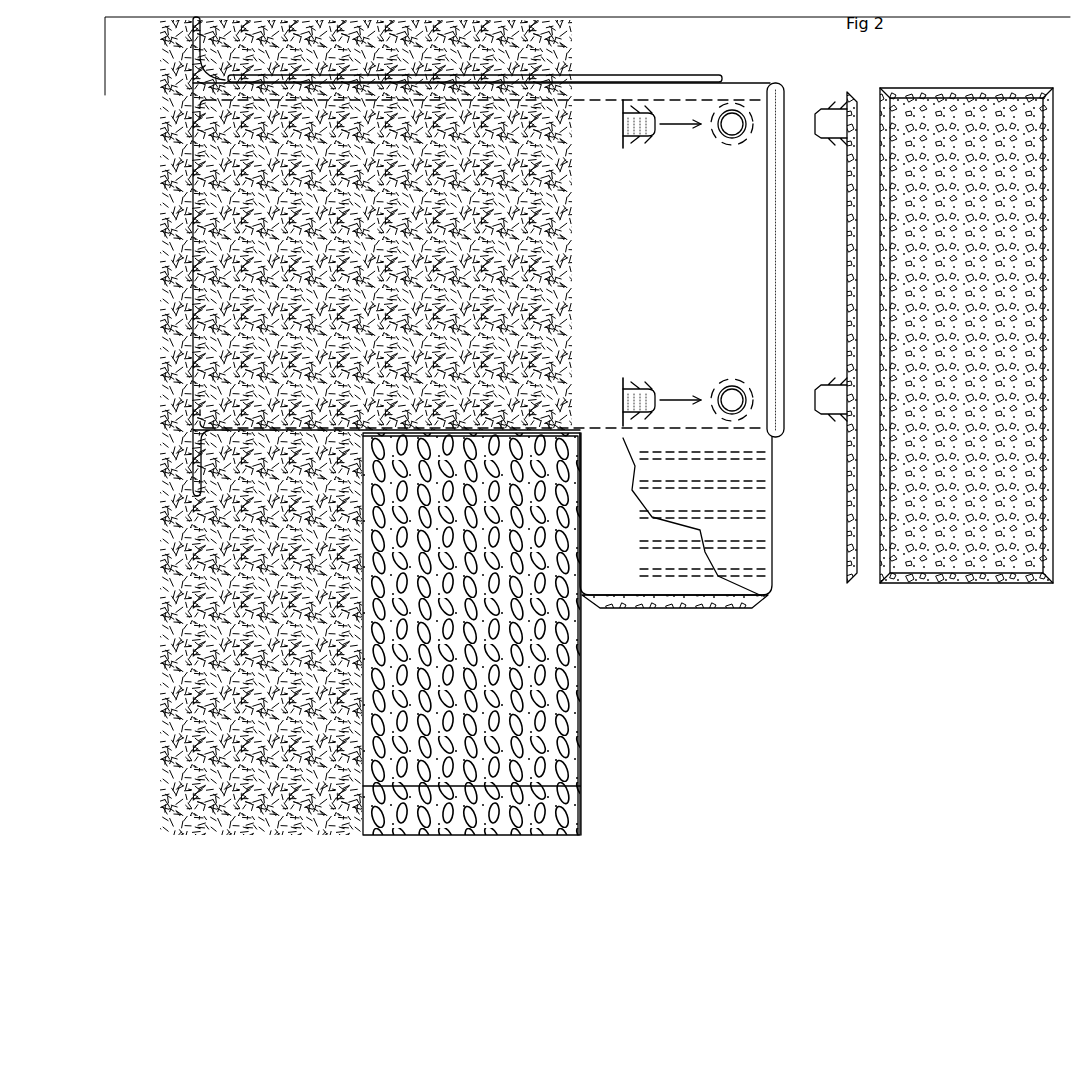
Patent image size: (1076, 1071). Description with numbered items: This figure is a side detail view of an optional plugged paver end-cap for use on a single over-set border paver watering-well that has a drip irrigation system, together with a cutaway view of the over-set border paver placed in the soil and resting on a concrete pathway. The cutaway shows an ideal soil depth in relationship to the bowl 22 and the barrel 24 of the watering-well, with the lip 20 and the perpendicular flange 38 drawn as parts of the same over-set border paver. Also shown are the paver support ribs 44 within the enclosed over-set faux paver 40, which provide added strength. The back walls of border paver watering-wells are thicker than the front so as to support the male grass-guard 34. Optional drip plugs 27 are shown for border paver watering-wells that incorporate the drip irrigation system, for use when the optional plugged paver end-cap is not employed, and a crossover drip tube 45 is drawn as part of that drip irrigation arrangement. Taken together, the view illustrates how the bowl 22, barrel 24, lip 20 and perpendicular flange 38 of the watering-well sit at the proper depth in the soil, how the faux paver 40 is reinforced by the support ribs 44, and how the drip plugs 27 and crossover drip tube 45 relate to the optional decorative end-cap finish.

The lip 20 is at (786, 100).
The bowl 22 is at (662, 312).
The barrel 24 is at (497, 252).
The drip plug 27 is at (647, 115).
The male grass-guard 34 is at (578, 79).
The perpendicular flange 38 is at (193, 430).
The faux paver 40 is at (735, 603).
The paver support ribs 44 is at (727, 549).
The crossover drip tube 45 is at (852, 590).